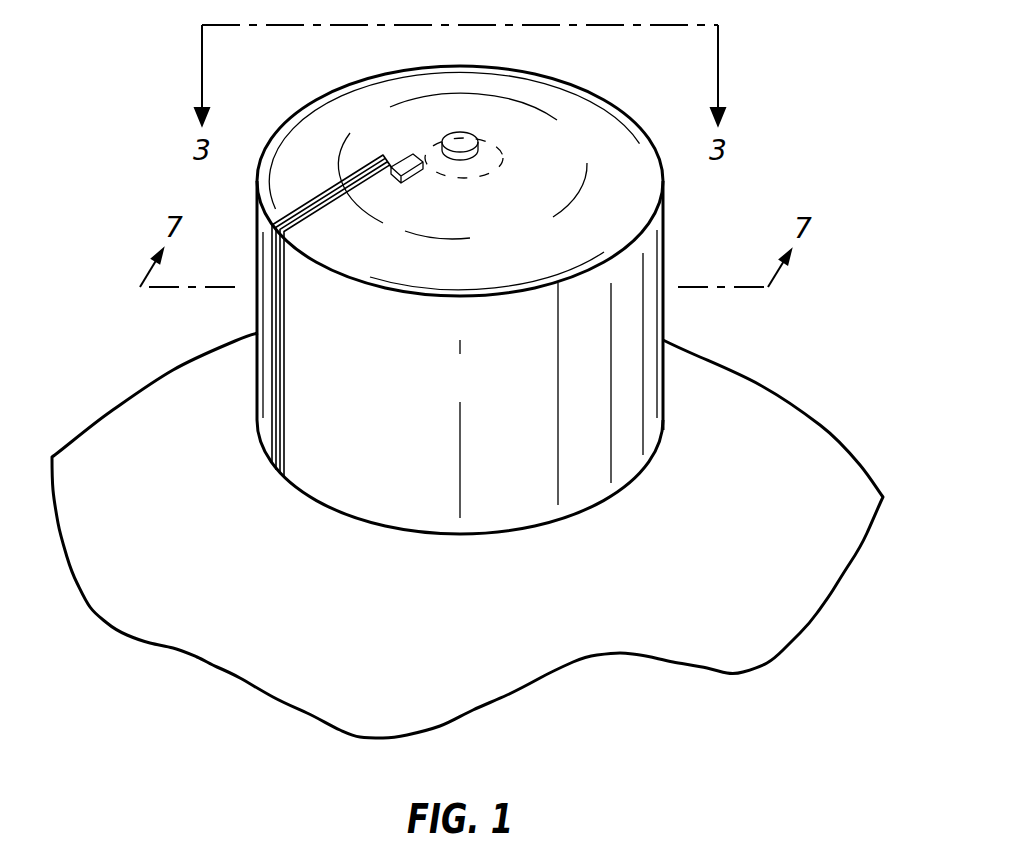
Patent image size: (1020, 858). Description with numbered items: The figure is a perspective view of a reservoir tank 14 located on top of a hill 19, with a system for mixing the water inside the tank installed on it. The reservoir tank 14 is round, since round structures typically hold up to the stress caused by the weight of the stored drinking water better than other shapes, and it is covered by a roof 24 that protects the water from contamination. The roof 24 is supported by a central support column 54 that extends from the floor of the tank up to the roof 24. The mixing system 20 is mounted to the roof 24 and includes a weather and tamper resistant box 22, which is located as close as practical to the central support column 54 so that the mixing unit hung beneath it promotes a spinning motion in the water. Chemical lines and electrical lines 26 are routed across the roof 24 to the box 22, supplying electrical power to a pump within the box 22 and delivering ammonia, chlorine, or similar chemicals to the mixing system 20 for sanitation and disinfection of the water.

The reservoir tank 14 is at (600, 85).
The hill 19 is at (720, 483).
The mixing system 20 is at (381, 146).
The weather and tamper resistant box 22 is at (398, 163).
The roof 24 is at (547, 191).
The chemical lines and electrical lines 26 is at (395, 257).
The central support column 54 is at (462, 140).